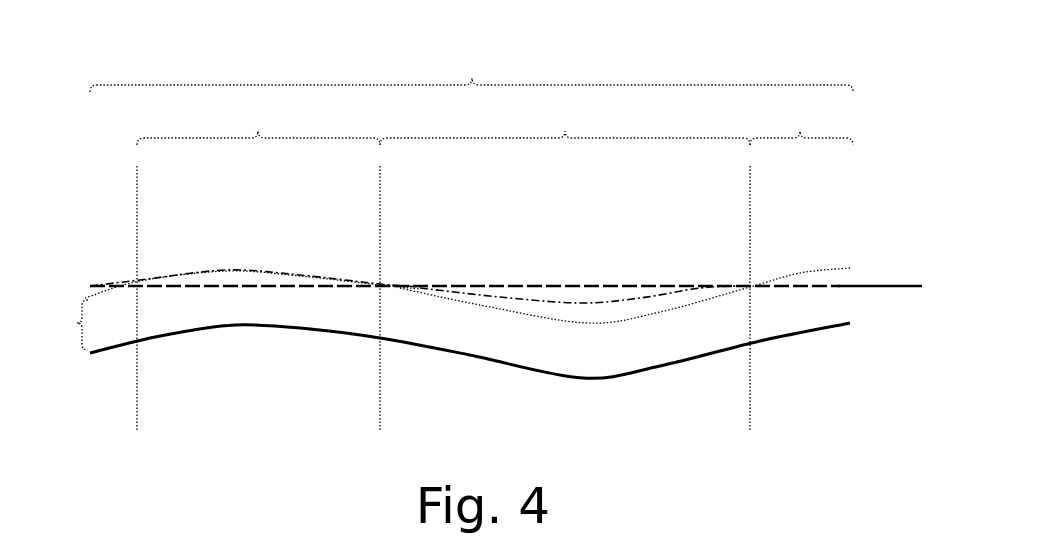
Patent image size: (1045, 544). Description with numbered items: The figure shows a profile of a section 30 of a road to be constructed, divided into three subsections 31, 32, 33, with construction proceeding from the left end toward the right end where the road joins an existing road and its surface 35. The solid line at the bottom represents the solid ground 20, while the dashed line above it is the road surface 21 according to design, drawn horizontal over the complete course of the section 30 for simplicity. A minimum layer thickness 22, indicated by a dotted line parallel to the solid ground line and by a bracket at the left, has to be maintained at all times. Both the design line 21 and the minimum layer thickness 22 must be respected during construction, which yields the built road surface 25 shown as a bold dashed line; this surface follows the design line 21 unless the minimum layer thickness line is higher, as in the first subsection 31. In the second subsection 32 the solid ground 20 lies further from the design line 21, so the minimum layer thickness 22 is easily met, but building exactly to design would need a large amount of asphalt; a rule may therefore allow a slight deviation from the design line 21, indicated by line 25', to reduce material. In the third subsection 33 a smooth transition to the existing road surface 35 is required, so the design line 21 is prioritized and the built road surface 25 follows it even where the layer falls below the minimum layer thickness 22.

The solid ground 20 is at (215, 325).
The road surface according to design 21 is at (333, 287).
The minimum layer thickness 22 is at (58, 325).
The road surface 25 is at (252, 252).
The deviating road surface line 25' is at (625, 363).
The road section 30 is at (471, 66).
The first subsection 31 is at (258, 265).
The second subsection 32 is at (565, 264).
The third subsection 33 is at (801, 265).
The existing road surface 35 is at (882, 286).